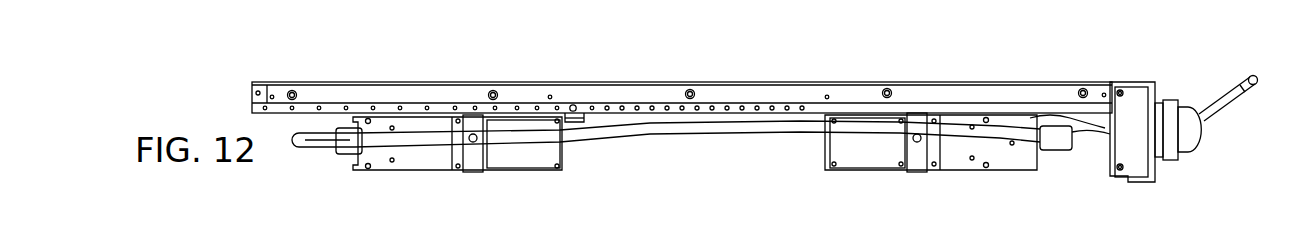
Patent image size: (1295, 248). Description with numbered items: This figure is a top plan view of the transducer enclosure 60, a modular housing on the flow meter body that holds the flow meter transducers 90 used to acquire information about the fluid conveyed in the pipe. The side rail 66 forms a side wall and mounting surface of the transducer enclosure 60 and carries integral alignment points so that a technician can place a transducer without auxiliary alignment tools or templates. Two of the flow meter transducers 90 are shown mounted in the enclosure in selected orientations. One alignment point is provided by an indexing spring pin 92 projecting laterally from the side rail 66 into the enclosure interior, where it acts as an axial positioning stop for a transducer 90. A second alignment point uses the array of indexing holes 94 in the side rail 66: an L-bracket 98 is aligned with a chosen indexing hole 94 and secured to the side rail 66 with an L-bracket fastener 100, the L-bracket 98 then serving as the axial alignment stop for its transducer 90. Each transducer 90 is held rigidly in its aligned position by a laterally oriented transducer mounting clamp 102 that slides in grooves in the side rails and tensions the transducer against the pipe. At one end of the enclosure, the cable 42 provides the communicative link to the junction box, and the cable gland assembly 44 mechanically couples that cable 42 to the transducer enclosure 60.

The transducer enclosure 60 is at (300, 62).
The side rail 66 is at (340, 82).
The indexing holes 94 is at (607, 106).
The L-bracket fastener 100 is at (572, 106).
The L-bracket 98 is at (576, 123).
The indexing spring pins 92 is at (824, 130).
The flow meter transducers 90 is at (515, 172).
The transducer mounting clamp 102 is at (478, 172).
The cable gland assembly 44 is at (1180, 180).
The cable 42 is at (1238, 105).